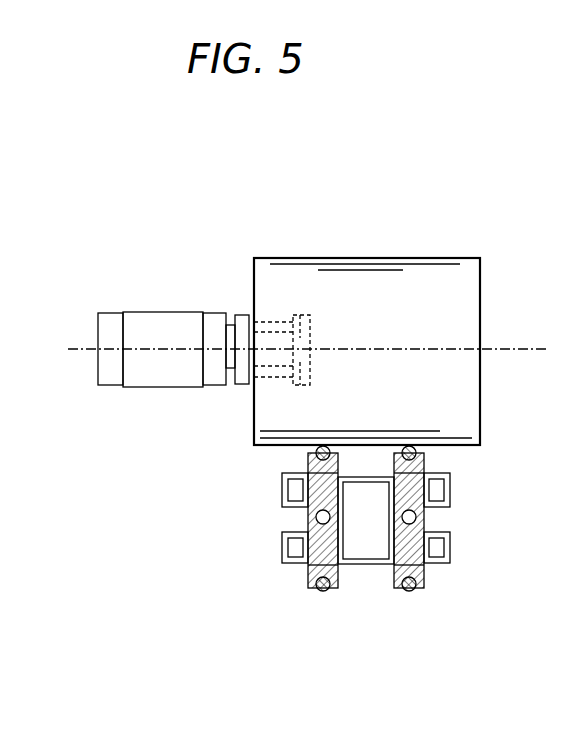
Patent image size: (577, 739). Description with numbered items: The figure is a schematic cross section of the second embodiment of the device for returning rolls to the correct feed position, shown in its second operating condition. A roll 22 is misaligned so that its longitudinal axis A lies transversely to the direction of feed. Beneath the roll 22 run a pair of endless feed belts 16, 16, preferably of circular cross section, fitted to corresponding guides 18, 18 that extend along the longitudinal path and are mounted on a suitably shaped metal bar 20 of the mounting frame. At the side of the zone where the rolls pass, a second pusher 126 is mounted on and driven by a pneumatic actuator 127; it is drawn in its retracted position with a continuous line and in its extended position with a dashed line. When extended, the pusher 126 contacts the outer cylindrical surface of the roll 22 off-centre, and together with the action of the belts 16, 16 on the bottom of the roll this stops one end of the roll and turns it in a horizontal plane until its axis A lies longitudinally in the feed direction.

The endless belts 16 is at (305, 453).
The guides 18 is at (280, 474).
The metal bar 20 is at (371, 565).
The roll 22 is at (351, 317).
The second pusher 126 is at (243, 325).
The pneumatic actuator 127 is at (162, 330).
The longitudinal axis A is at (500, 349).